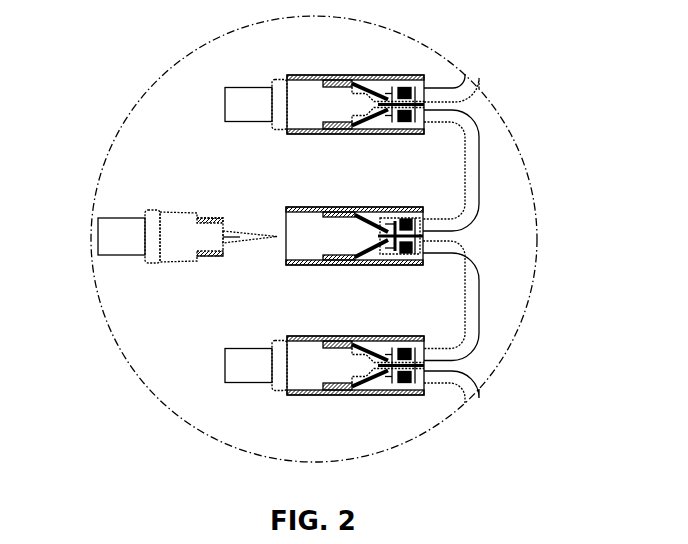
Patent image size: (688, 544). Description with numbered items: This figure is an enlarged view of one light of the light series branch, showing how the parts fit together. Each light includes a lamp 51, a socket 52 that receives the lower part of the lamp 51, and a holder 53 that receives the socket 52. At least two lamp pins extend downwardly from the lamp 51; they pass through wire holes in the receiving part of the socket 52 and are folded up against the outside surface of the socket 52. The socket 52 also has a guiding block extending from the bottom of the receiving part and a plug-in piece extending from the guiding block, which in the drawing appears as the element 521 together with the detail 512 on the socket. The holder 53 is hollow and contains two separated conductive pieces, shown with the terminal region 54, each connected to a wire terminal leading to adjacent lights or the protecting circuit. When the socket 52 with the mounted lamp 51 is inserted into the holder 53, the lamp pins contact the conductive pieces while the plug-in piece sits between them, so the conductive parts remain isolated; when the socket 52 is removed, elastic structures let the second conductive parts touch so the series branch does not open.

The lamp 51 is at (125, 226).
The collar 512 is at (208, 217).
The socket 52 is at (182, 238).
The contact pin 521 is at (248, 233).
The holder 53 is at (402, 206).
The terminal 54 is at (377, 252).